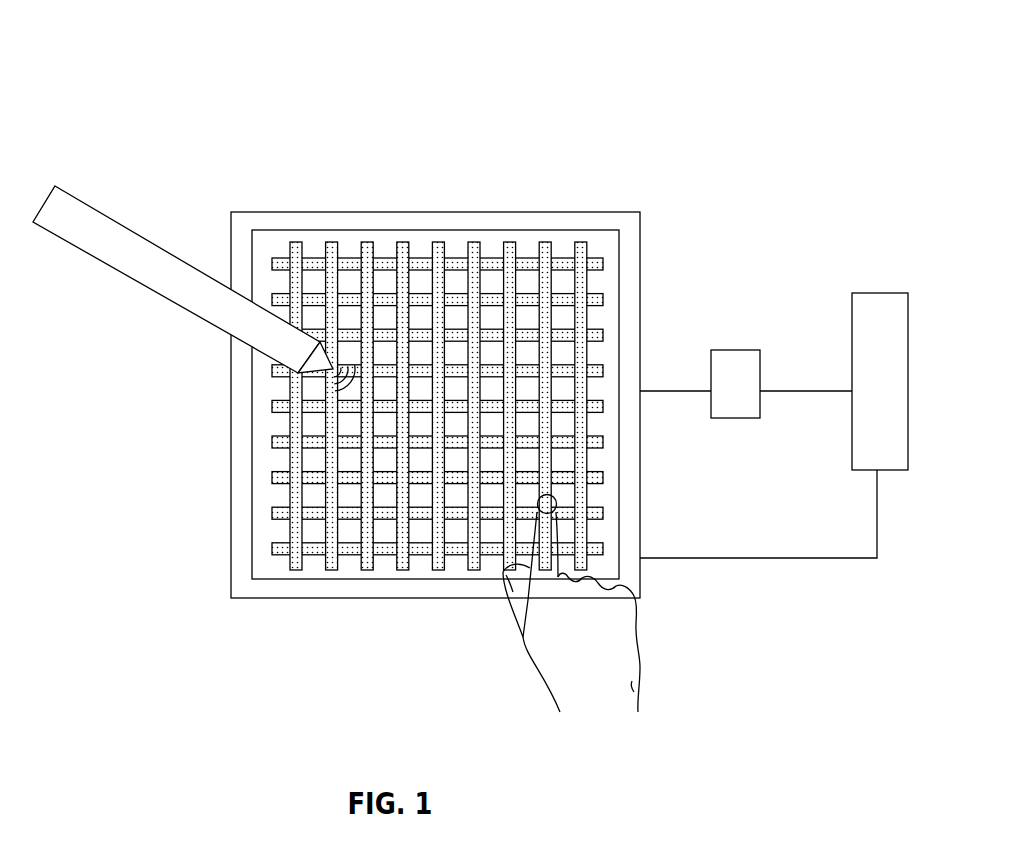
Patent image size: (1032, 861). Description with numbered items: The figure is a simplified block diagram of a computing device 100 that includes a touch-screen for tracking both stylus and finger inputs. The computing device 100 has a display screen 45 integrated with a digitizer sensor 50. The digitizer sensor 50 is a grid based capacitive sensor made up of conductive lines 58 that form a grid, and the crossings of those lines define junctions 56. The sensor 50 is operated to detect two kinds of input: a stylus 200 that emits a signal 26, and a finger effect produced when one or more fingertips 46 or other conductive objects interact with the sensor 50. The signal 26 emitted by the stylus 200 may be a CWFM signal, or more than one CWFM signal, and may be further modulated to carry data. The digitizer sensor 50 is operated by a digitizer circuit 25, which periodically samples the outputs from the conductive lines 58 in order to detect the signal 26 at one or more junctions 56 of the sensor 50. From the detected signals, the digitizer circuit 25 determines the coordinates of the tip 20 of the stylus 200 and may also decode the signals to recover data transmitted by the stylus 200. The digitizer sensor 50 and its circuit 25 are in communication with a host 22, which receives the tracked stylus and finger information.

The computing device 100 is at (362, 116).
The stylus 200 is at (182, 257).
The tip 20 is at (298, 375).
The signal 26 is at (330, 393).
The display screen 45 is at (523, 210).
The digitizer sensor 50 is at (619, 270).
The junctions 56 is at (368, 475).
The conductive lines 58 is at (319, 248).
The fingertips 46 is at (540, 502).
The digitizer circuit 25 is at (735, 350).
The host 22 is at (878, 293).